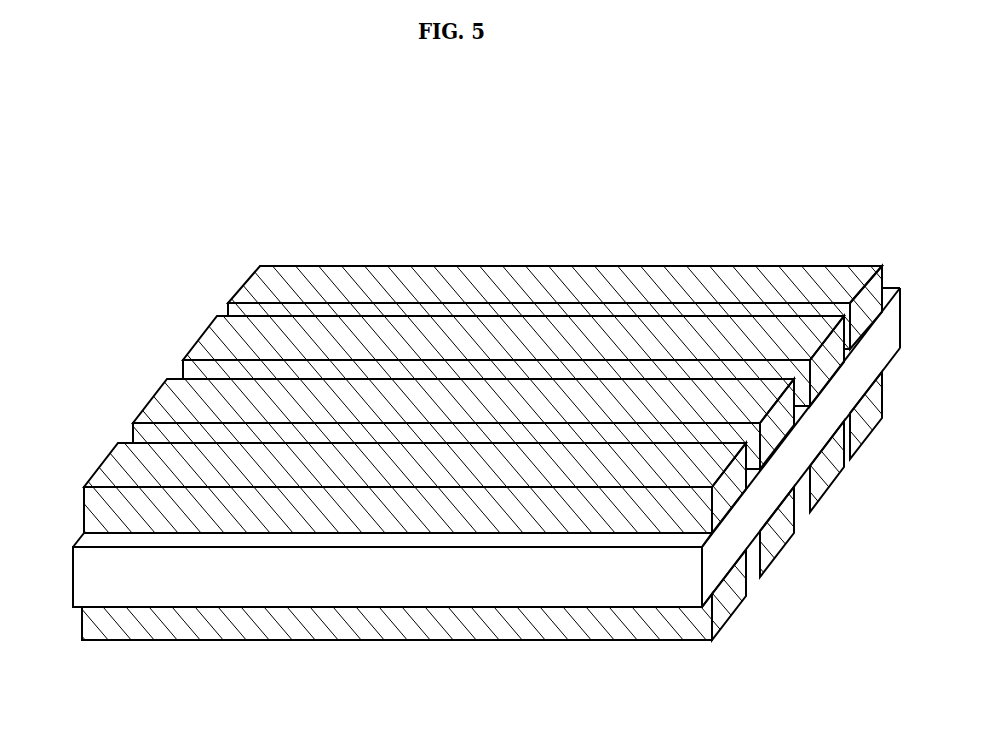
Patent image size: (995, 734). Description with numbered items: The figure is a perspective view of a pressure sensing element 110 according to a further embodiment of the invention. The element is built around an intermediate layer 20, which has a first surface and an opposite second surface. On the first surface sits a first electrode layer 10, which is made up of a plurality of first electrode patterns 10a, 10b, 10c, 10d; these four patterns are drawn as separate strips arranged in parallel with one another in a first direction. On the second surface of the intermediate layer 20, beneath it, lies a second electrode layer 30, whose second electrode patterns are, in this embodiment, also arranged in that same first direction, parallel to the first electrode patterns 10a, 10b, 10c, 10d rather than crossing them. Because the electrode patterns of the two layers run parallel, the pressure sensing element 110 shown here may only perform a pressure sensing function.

The pressure sensing element 110 is at (97, 113).
The first electrode layer 10 is at (172, 190).
The first electrode pattern 10a is at (120, 473).
The first electrode pattern 10b is at (170, 407).
The first electrode pattern 10c is at (217, 347).
The first electrode pattern 10d is at (255, 297).
The intermediate layer 20 is at (778, 483).
The second electrode layer 30 is at (476, 630).